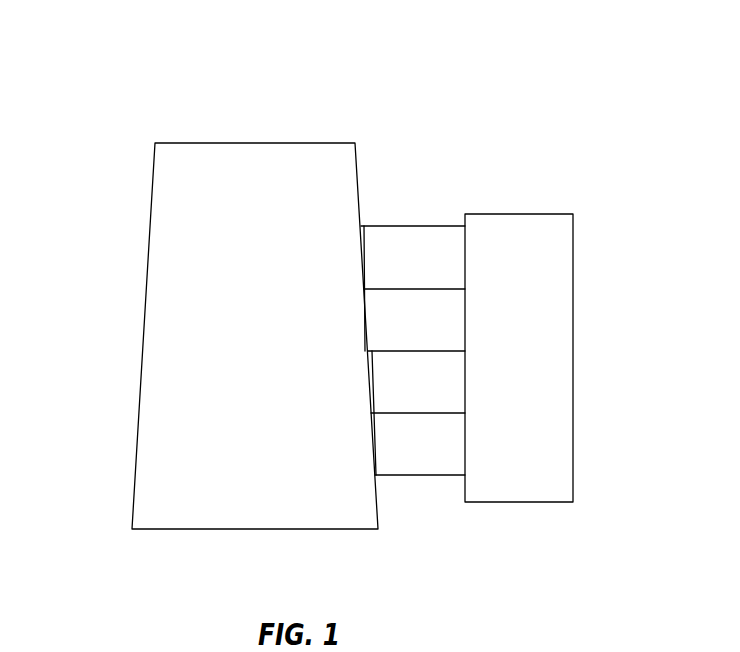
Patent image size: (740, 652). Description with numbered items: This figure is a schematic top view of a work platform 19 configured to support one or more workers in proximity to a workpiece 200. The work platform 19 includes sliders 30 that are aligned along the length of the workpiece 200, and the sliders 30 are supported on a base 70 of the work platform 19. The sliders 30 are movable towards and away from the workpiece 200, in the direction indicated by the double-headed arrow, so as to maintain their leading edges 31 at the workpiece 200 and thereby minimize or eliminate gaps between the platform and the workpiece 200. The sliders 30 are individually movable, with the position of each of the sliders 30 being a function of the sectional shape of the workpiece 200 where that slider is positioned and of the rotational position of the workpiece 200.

The workpiece 200 is at (197, 165).
The work platform 19 is at (553, 178).
The sliders 30 is at (435, 313).
The leading edges 31 is at (367, 320).
The base 70 is at (557, 262).